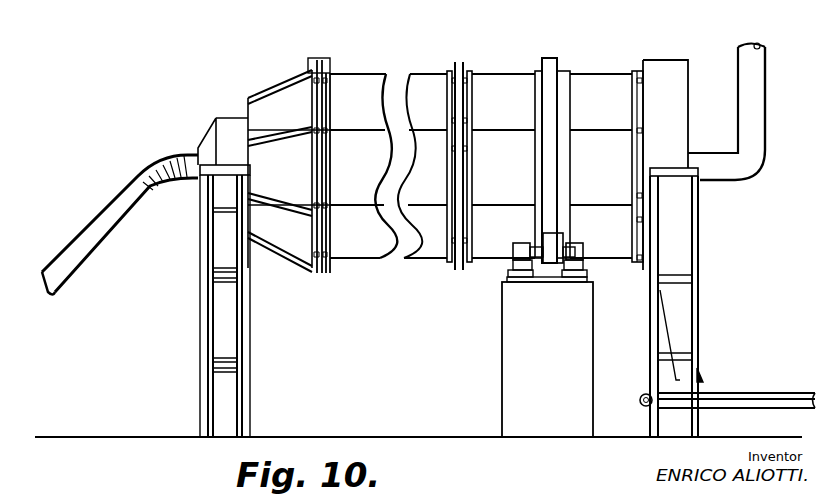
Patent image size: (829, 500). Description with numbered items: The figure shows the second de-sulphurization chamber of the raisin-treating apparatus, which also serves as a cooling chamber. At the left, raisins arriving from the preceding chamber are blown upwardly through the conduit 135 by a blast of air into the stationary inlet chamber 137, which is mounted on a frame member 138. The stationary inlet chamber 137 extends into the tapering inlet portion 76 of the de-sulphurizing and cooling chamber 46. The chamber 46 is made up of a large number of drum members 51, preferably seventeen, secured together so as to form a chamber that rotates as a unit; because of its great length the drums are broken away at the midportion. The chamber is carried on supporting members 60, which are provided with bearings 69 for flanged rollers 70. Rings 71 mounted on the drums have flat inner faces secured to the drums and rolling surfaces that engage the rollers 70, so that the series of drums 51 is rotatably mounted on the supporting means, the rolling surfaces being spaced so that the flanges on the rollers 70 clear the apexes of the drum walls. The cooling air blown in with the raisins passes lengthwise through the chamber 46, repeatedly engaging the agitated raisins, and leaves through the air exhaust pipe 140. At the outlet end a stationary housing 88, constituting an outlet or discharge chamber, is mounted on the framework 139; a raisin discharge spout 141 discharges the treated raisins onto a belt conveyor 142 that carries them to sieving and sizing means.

The conduit 135 is at (128, 196).
The stationary inlet chamber 137 is at (223, 124).
The frame member 138 is at (240, 300).
The tapering inlet portion 76 is at (256, 97).
The drum members 51 is at (364, 74).
The de-sulphurizing and cooling chamber 46 is at (500, 74).
The rings 71 is at (553, 60).
The flanged rollers 70 is at (547, 249).
The bearings 69 is at (517, 249).
The supporting members 60 is at (577, 315).
The stationary housing 88 is at (672, 70).
The air exhaust pipe 140 is at (757, 104).
The framework 139 is at (695, 268).
The raisin discharge spout 141 is at (705, 376).
The belt conveyor 142 is at (763, 393).